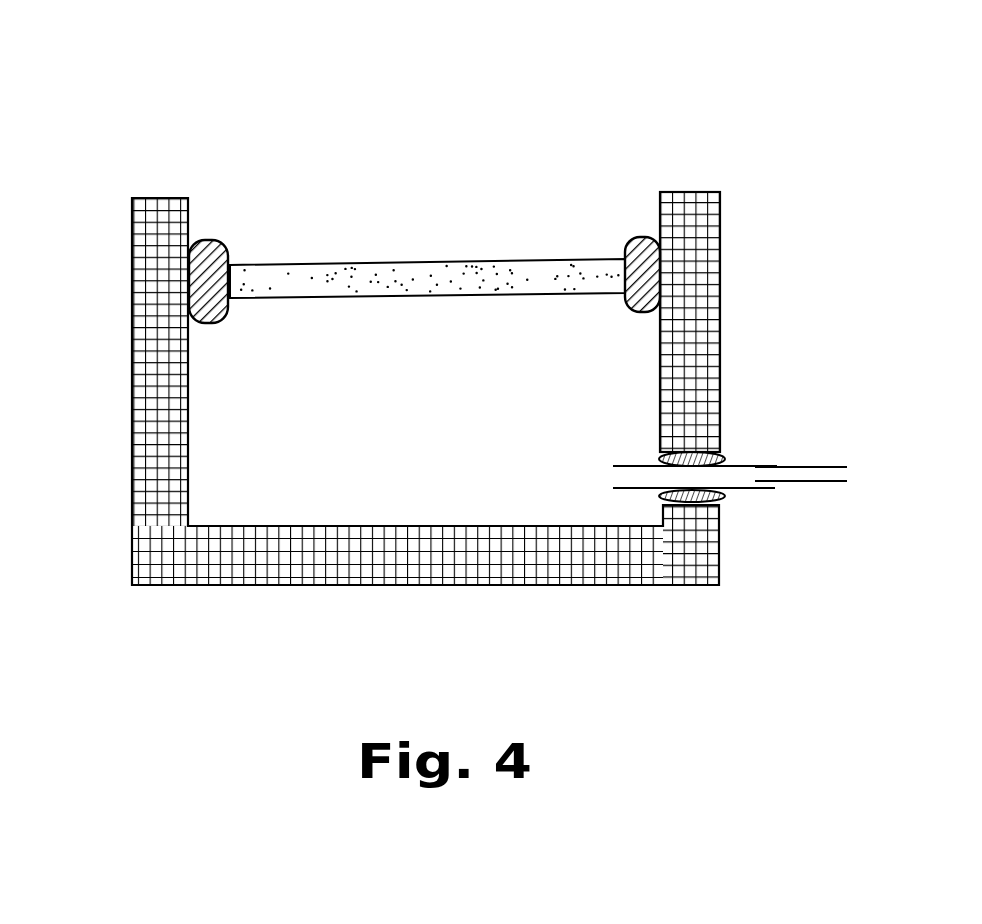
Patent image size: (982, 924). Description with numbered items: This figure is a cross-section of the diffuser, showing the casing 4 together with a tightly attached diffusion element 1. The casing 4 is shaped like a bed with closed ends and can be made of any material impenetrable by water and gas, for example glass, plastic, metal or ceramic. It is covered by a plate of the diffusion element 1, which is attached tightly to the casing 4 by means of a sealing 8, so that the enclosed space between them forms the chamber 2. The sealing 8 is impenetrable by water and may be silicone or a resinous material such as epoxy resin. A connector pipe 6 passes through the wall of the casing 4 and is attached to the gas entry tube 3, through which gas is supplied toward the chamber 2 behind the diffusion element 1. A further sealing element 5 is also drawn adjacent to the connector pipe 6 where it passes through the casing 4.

The diffusion element 1 is at (278, 275).
The chamber 2 is at (255, 375).
The gas entry tube 3 is at (812, 468).
The casing 4 is at (155, 212).
The lower seal ring 5 is at (723, 500).
The connector pipe 6 is at (733, 463).
The sealing 8 is at (638, 242).